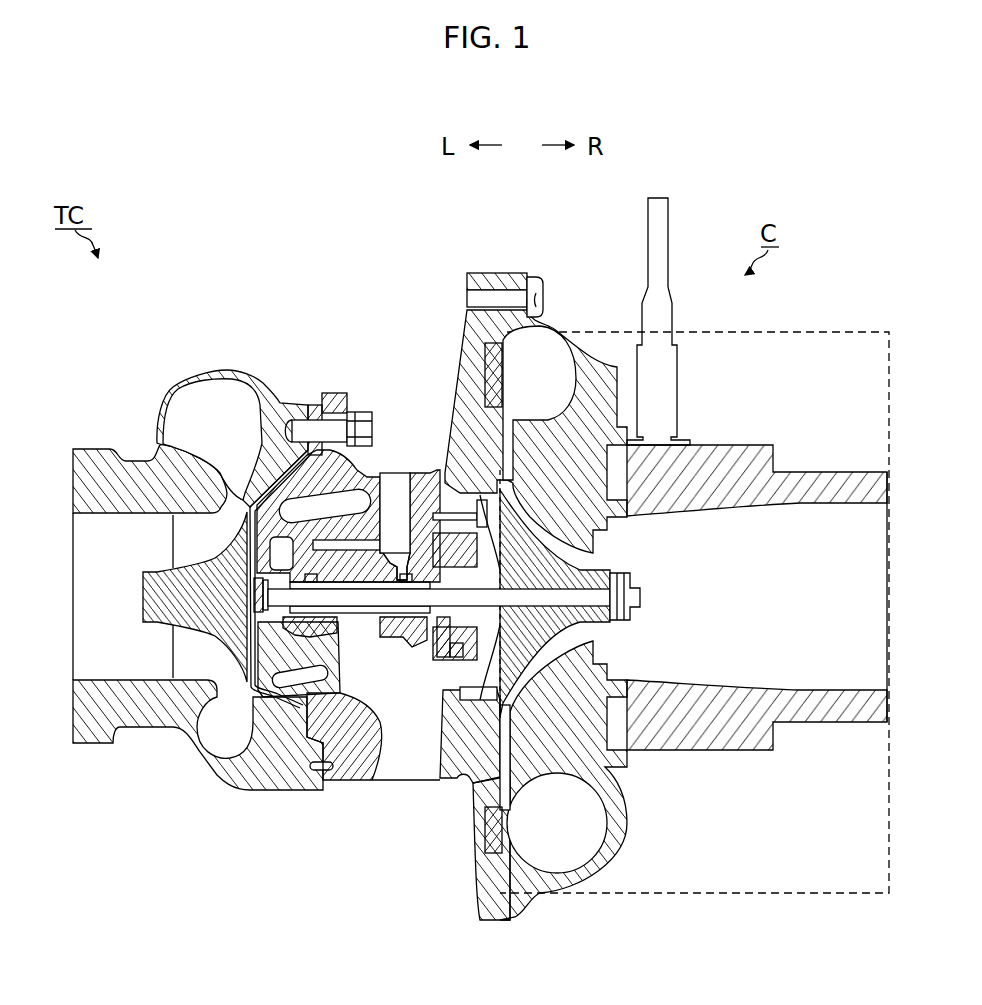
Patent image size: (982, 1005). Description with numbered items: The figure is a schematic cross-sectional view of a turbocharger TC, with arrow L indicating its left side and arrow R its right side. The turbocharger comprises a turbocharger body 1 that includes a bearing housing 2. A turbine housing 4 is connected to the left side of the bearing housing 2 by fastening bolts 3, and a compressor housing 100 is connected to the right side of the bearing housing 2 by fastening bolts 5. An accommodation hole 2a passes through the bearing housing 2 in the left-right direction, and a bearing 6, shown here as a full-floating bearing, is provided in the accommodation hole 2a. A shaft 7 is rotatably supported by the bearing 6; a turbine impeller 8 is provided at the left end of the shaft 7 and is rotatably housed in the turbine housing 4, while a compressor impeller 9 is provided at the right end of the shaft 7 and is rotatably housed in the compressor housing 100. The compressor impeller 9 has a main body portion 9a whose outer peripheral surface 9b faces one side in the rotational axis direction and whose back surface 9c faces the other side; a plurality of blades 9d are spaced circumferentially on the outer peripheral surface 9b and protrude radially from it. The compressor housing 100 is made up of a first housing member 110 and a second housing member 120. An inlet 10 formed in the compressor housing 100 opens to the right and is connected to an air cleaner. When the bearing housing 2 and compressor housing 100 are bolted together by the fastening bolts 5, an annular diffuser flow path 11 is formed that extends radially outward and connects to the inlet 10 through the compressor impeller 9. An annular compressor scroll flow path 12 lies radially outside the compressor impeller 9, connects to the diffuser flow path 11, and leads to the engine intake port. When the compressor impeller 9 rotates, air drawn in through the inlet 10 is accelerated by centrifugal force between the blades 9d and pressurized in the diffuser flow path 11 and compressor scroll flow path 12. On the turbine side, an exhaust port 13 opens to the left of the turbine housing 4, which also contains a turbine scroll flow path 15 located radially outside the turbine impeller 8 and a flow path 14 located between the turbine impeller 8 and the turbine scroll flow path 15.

The turbocharger body 1 is at (147, 340).
The bearing housing 2 is at (433, 470).
The accommodation hole 2a is at (401, 575).
The fastening bolts 3 is at (348, 408).
The turbine housing 4 is at (266, 383).
The fastening bolts 5 is at (534, 270).
The bearing 6 is at (412, 632).
The shaft 7 is at (397, 628).
The turbine impeller 8 is at (210, 628).
The compressor impeller 9 is at (525, 650).
The main body portion 9a is at (652, 700).
The outer peripheral surface 9b is at (625, 670).
The back surface 9c is at (457, 772).
The blades 9d is at (540, 665).
The inlet 10 is at (889, 557).
The diffuser flow path 11 is at (483, 407).
The compressor scroll flow path 12 is at (548, 350).
The exhaust port 13 is at (73, 555).
The flow path 14 is at (223, 494).
The turbine scroll flow path 15 is at (203, 403).
The compressor housing 100 is at (799, 440).
The first housing member 110 is at (858, 440).
The second housing member 120 is at (513, 925).